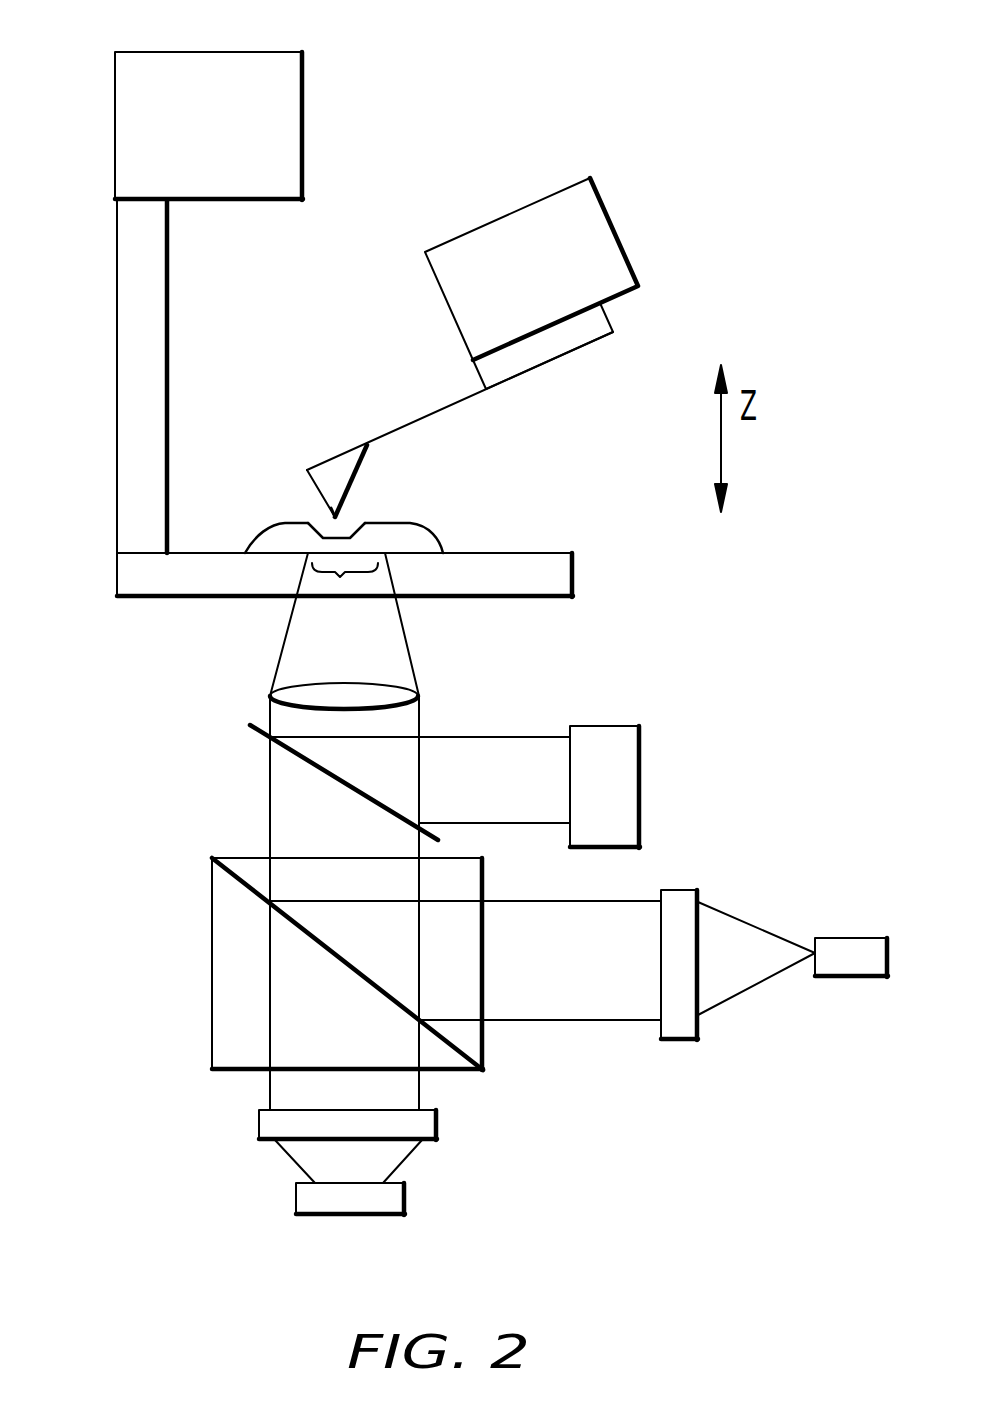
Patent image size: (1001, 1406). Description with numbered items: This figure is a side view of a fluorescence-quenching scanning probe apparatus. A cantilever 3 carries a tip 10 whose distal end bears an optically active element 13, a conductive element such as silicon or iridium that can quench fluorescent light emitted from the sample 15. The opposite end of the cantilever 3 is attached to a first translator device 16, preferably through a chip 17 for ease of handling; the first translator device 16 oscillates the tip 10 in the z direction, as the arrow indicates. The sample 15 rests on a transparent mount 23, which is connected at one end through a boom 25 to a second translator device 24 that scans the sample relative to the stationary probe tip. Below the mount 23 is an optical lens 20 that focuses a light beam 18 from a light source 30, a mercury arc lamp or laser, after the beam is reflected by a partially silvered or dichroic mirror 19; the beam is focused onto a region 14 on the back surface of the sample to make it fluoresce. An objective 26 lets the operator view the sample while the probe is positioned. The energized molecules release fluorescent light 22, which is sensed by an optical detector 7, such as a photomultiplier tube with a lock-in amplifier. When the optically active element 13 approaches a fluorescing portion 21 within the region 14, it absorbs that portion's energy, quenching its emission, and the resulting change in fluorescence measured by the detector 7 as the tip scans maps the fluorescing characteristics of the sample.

The cantilever 3 is at (410, 422).
The optical detector 7 is at (308, 1194).
The tip 10 is at (350, 467).
The optically active element 13 is at (333, 516).
The region 14 is at (339, 578).
The sample 15 is at (428, 548).
The first translator device 16 is at (590, 207).
The chip 17 is at (583, 328).
The light beam 18 is at (628, 905).
The partially silvered or dichroic mirror 19 is at (240, 880).
The optical lens 20 is at (392, 693).
The fluorescing portion 21 is at (340, 521).
The fluorescent light 22 is at (283, 1083).
The transparent mount 23 is at (558, 574).
The second translator device 24 is at (115, 54).
The boom 25 is at (118, 380).
The objective 26 is at (623, 740).
The light source 30 is at (847, 945).